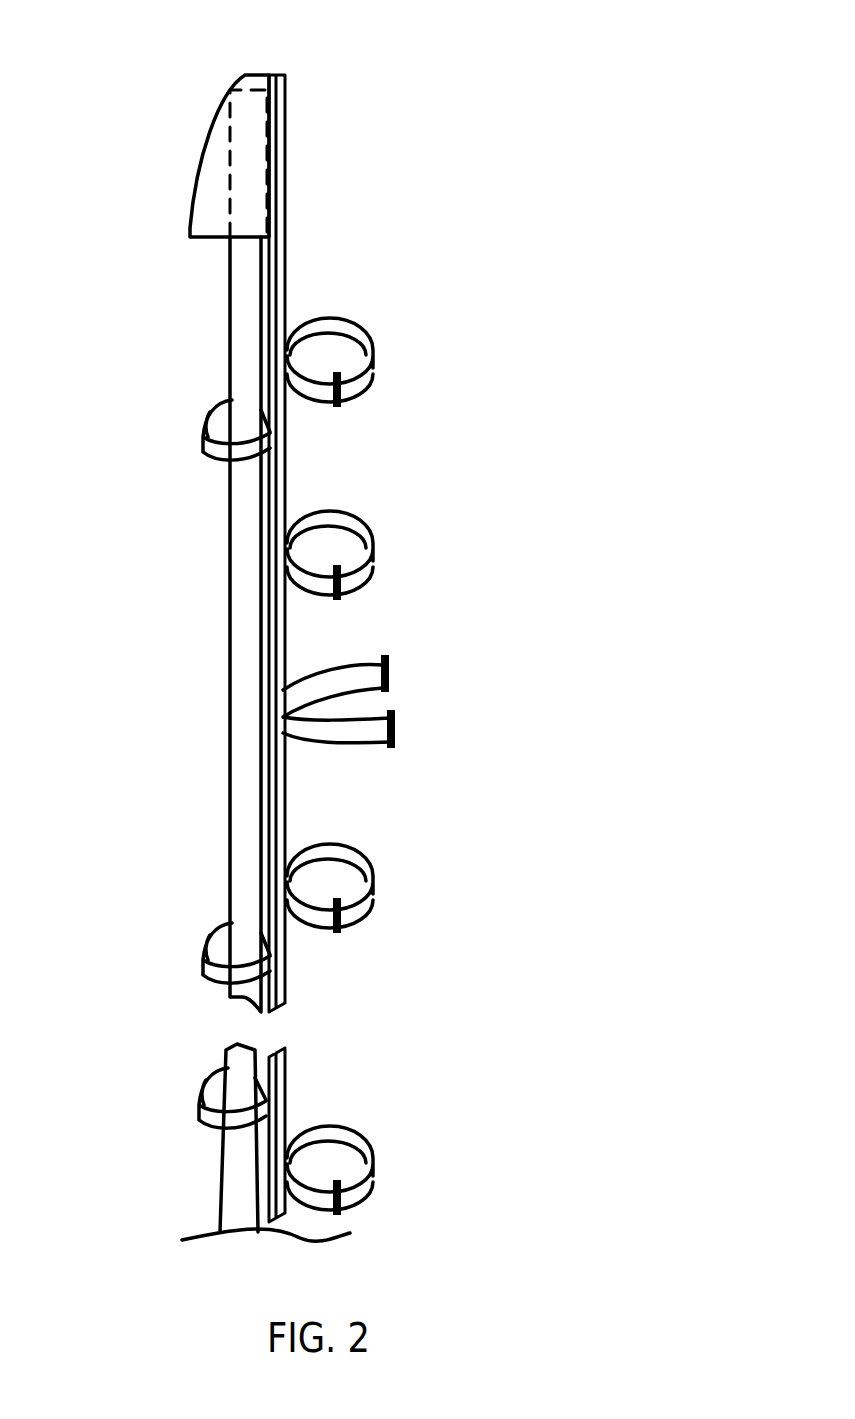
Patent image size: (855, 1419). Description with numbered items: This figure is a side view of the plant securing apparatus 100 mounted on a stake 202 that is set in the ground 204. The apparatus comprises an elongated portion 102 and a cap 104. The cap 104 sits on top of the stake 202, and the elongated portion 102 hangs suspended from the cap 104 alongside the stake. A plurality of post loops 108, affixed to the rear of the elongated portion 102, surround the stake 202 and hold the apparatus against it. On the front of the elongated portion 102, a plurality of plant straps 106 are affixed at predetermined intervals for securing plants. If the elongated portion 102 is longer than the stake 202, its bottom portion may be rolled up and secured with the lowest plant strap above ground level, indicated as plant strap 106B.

The plant securing apparatus 100 is at (370, 112).
The elongated portion 102 is at (284, 633).
The cap 104 is at (212, 150).
The plant straps 106 is at (360, 335).
The lowest plant strap 106B is at (365, 1147).
The post loops 108 is at (212, 410).
The stake 202 is at (246, 620).
The ground 204 is at (201, 1265).